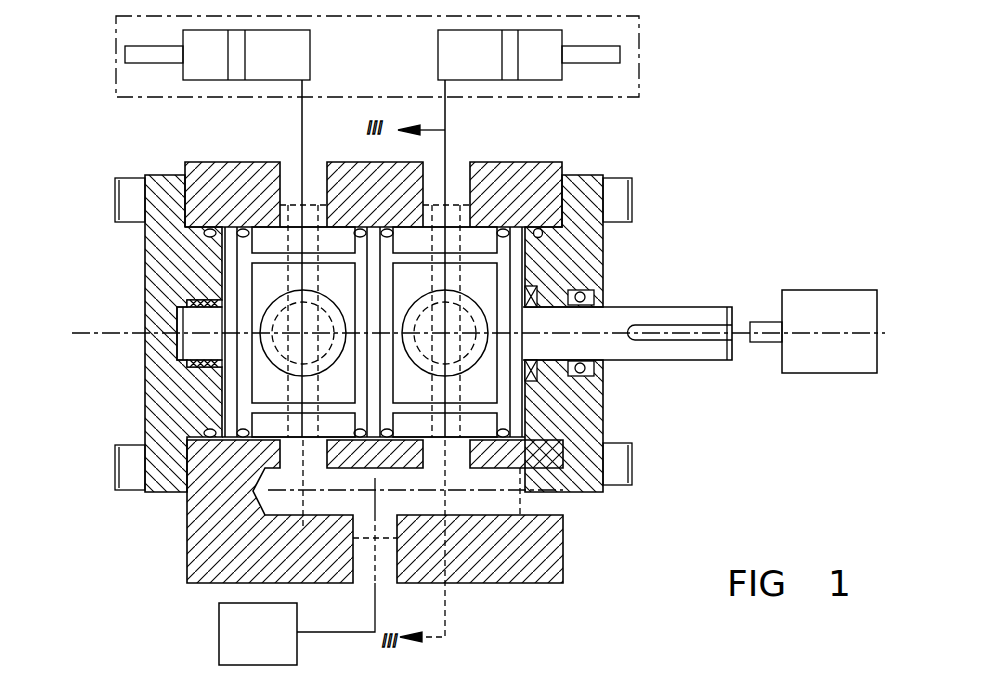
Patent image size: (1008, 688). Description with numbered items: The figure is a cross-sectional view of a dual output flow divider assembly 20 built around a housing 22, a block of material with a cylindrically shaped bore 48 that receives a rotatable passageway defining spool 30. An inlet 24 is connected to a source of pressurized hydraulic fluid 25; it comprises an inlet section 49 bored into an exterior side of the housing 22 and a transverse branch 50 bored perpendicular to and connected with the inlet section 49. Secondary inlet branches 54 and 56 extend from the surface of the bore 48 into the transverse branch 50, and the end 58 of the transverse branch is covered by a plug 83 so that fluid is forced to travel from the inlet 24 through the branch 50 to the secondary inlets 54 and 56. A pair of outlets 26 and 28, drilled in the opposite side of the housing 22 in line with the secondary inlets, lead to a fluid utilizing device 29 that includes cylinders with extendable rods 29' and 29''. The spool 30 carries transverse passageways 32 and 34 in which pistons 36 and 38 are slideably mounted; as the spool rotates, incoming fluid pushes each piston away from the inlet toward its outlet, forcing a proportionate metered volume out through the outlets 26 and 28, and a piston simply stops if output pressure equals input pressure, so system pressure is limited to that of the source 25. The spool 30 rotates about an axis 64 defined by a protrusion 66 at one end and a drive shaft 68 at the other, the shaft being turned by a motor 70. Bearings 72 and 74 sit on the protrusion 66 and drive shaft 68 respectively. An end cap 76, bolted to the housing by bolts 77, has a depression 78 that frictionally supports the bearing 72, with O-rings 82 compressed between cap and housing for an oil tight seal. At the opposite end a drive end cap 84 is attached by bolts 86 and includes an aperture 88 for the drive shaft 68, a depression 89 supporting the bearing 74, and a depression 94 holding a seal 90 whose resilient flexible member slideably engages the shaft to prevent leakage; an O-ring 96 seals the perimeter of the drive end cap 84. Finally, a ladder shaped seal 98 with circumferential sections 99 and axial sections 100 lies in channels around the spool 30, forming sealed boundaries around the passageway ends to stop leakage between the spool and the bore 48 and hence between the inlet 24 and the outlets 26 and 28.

The flow divider assembly 20 is at (153, 591).
The housing 22 is at (178, 537).
The inlet 24 is at (383, 592).
The source of pressurized hydraulic fluid 25 is at (218, 655).
The outlet 26 is at (290, 162).
The outlet 28 is at (455, 162).
The fluid utilizing device 29 is at (413, 70).
The cylinder/extendable rod 29' is at (217, 233).
The cylinder/extendable rod 29'' is at (532, 233).
The spool 30 is at (222, 409).
The passageway 32 is at (335, 362).
The passageway 34 is at (472, 362).
The piston 36 is at (330, 304).
The piston 38 is at (478, 306).
The bore 48 is at (525, 423).
The inlet section 49 is at (395, 572).
The transverse branch 50 is at (419, 489).
The secondary inlet branch 54 is at (322, 467).
The secondary inlet branch 56 is at (454, 464).
The end of transverse branch 58 is at (504, 507).
The axis 64 is at (88, 335).
The protrusion 66 is at (211, 326).
The drive shaft 68 is at (715, 362).
The motor 70 is at (836, 373).
The bearing 72 is at (177, 305).
The bearing 74 is at (540, 288).
The end cap 76 is at (145, 236).
The bolts 77 is at (116, 190).
The depression 78 is at (177, 365).
The O-rings 82 is at (208, 237).
The plug 83 is at (548, 502).
The drive end cap 84 is at (603, 175).
The bolts 86 is at (632, 207).
The aperture 88 is at (600, 362).
The depression 89 is at (528, 265).
The seal 90 is at (550, 296).
The depression 94 is at (583, 320).
The O-ring 96 is at (537, 246).
The ladder shaped seal 98 is at (262, 238).
The circumferential sections 99 is at (253, 372).
The axial sections 100 is at (266, 258).